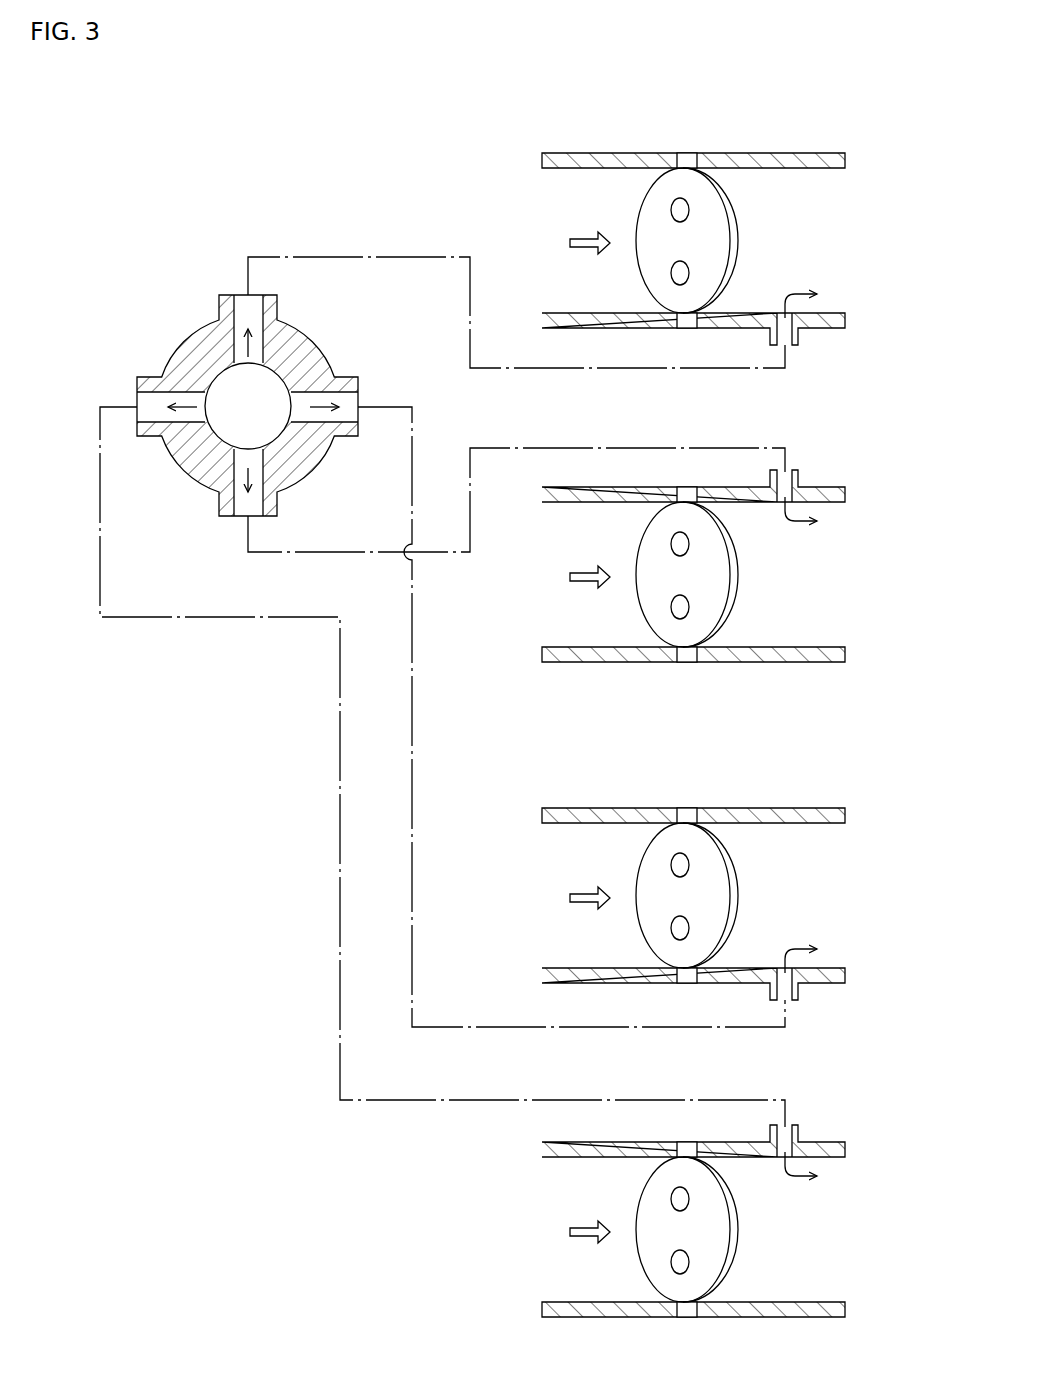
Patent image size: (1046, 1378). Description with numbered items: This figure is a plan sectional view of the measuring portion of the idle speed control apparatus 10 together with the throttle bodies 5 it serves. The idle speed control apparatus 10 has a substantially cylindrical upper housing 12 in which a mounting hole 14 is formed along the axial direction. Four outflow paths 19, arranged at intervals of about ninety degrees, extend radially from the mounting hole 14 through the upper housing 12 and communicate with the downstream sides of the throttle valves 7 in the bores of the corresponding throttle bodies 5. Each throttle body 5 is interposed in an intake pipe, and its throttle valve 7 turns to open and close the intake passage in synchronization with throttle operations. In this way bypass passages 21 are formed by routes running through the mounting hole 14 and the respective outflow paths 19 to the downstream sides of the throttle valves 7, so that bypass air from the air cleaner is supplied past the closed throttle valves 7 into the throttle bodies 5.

The throttle body 5 is at (617, 153).
The throttle valve 7 is at (708, 202).
The idle speed control apparatus 10 is at (232, 382).
The upper housing 12 is at (167, 356).
The mounting hole 14 is at (265, 386).
The outflow path 19 is at (241, 353).
The bypass passage 21 is at (760, 447).